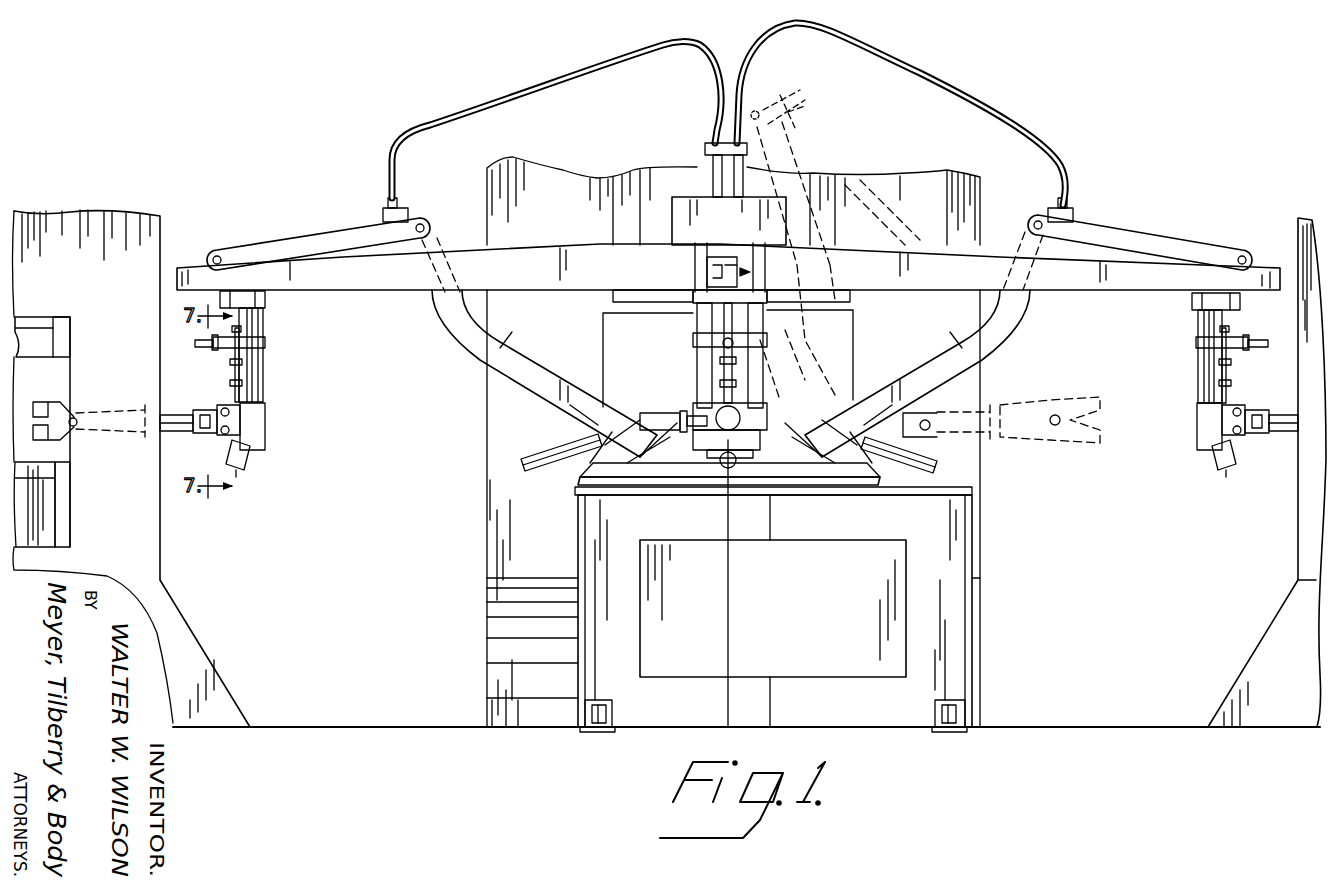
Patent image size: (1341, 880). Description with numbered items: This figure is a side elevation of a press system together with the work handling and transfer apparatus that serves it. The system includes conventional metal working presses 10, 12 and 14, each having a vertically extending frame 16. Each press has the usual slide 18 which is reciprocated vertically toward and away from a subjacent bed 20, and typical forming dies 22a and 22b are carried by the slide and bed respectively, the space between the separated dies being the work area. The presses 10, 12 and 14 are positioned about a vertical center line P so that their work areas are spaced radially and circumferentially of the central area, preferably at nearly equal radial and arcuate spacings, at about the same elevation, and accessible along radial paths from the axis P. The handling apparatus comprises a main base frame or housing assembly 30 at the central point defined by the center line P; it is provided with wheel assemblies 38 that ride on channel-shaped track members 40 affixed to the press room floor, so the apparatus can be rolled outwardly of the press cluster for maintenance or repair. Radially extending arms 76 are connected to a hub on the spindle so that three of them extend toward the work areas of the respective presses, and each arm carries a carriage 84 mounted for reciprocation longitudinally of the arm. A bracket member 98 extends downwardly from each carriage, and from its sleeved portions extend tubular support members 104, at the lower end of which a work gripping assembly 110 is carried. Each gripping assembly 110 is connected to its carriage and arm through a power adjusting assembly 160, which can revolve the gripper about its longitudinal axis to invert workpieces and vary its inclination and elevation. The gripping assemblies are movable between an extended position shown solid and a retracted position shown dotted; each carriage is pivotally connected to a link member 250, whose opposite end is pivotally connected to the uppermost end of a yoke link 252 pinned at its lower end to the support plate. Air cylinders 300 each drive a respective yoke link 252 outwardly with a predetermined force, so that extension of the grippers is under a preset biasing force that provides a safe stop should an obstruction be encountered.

The metal working press 10 is at (220, 152).
The metal working press 12 is at (482, 535).
The metal working press 14 is at (1238, 208).
The frame 16 is at (162, 225).
The slide 18 is at (62, 317).
The bed 20 is at (62, 535).
The forming die 22a is at (60, 482).
The forming die 22b is at (55, 348).
The main base frame or housing assembly 30 is at (952, 630).
The wheel assemblies 38 is at (590, 736).
The channel-shaped track members 40 is at (613, 712).
The radially extending arms 76 is at (733, 255).
The carriage 84 is at (222, 252).
The bracket member 98 is at (272, 299).
The tubular support members 104 is at (265, 372).
The work gripping assembly 110 is at (150, 440).
The power adjusting assembly 160 is at (211, 402).
The link member 250 is at (285, 228).
The yoke link 252 is at (478, 360).
The air cylinders 300 is at (540, 472).
The vertical center line P is at (730, 612).